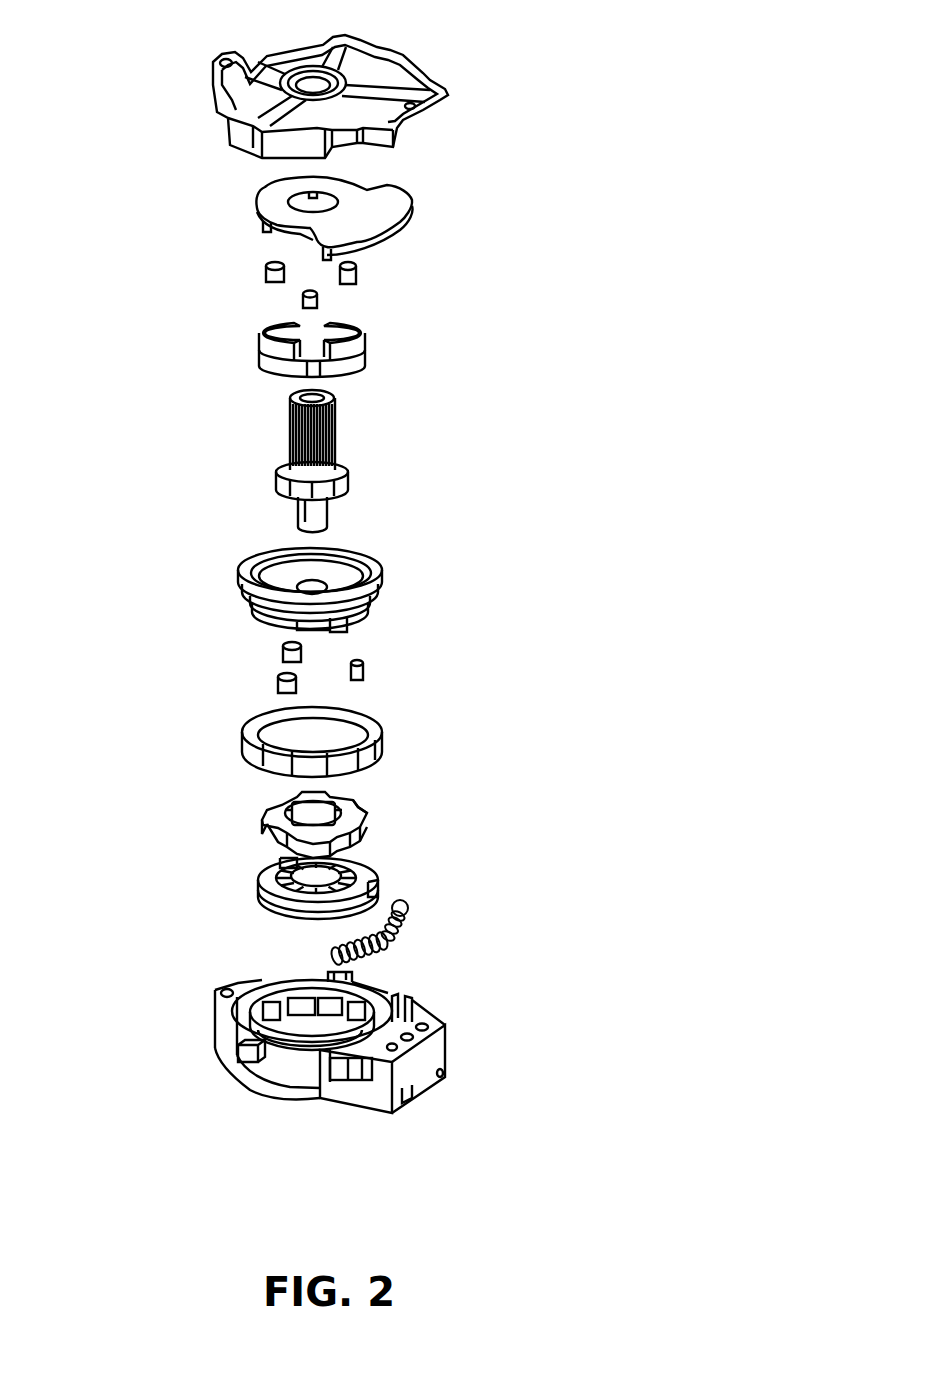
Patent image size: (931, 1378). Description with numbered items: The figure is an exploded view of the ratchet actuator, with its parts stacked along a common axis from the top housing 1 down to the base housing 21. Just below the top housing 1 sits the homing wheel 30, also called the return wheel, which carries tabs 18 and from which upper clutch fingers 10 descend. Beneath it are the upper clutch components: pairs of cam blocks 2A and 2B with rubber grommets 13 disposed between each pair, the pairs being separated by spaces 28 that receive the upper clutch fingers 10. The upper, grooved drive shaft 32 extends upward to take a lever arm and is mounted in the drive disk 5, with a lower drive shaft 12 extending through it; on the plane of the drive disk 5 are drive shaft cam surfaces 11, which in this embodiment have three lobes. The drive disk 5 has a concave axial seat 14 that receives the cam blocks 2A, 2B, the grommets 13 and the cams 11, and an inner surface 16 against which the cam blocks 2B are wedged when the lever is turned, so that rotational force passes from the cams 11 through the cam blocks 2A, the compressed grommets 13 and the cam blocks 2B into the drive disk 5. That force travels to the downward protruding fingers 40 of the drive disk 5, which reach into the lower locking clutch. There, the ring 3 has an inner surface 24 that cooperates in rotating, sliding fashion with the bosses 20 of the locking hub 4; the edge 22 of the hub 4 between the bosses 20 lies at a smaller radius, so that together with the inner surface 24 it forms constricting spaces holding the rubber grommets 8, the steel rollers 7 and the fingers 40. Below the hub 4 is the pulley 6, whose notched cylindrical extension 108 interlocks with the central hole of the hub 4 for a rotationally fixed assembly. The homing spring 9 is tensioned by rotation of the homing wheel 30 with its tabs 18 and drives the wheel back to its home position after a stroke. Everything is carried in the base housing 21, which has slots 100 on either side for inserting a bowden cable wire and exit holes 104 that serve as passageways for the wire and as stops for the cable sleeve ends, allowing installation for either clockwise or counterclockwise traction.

The top housing 1 is at (440, 121).
The upper clutch fingers 10 is at (266, 232).
The homing wheel 30 is at (435, 210).
The tabs 18 is at (331, 258).
The rubber grommets 13 is at (262, 266).
The cam blocks 2A is at (290, 330).
The cam blocks 2B is at (262, 349).
The spaces 28 is at (229, 323).
The drive shaft 32 is at (345, 425).
The drive shaft cam surfaces 11 is at (345, 478).
The lower drive shaft 12 is at (300, 507).
The concave axial seat 14 is at (284, 578).
The inner surface 16 is at (327, 558).
The drive disk 5 is at (326, 547).
The fingers 40 is at (378, 620).
The steel rollers 7 is at (270, 645).
The rubber grommets 8 is at (265, 674).
The inner surface 24 is at (355, 728).
The ring 3 is at (425, 707).
The edge 22 is at (372, 808).
The locking hub 4 is at (412, 788).
The bosses 20 is at (362, 836).
The pulley 6 is at (370, 870).
The cylindrical extension 108 is at (372, 878).
The homing spring 9 is at (418, 922).
The base housing 21 is at (207, 1025).
The slots 100 is at (362, 1077).
The exit holes 104 is at (443, 1071).